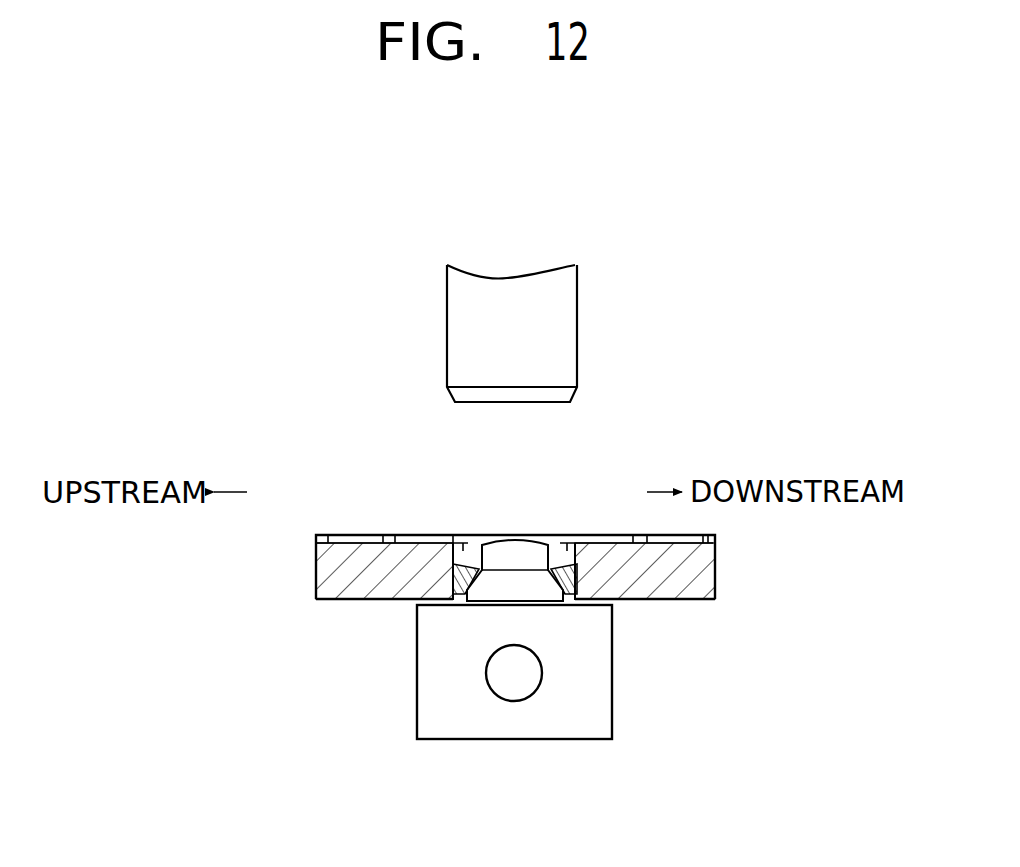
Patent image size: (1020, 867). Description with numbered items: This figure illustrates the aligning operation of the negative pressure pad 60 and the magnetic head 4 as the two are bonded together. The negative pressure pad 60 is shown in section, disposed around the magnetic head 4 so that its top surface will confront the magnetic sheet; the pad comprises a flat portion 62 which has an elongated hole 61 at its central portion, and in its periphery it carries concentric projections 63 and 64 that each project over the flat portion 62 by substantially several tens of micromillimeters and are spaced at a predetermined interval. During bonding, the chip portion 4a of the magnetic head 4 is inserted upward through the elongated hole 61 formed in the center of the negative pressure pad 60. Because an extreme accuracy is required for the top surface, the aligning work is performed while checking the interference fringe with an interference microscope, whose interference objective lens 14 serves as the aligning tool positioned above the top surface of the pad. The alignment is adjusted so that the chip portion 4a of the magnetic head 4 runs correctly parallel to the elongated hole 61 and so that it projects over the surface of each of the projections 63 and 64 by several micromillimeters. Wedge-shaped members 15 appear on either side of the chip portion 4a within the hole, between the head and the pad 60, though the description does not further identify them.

The magnetic head 4 is at (545, 733).
The chip portion 4a is at (528, 540).
The interference objective lens 14 is at (568, 345).
The wedge member 15 is at (458, 603).
The negative pressure pad 60 is at (717, 582).
The elongated hole 61 is at (462, 540).
The flat portion 62 is at (425, 538).
The concentric projection 63 is at (388, 538).
The concentric projection 64 is at (323, 538).